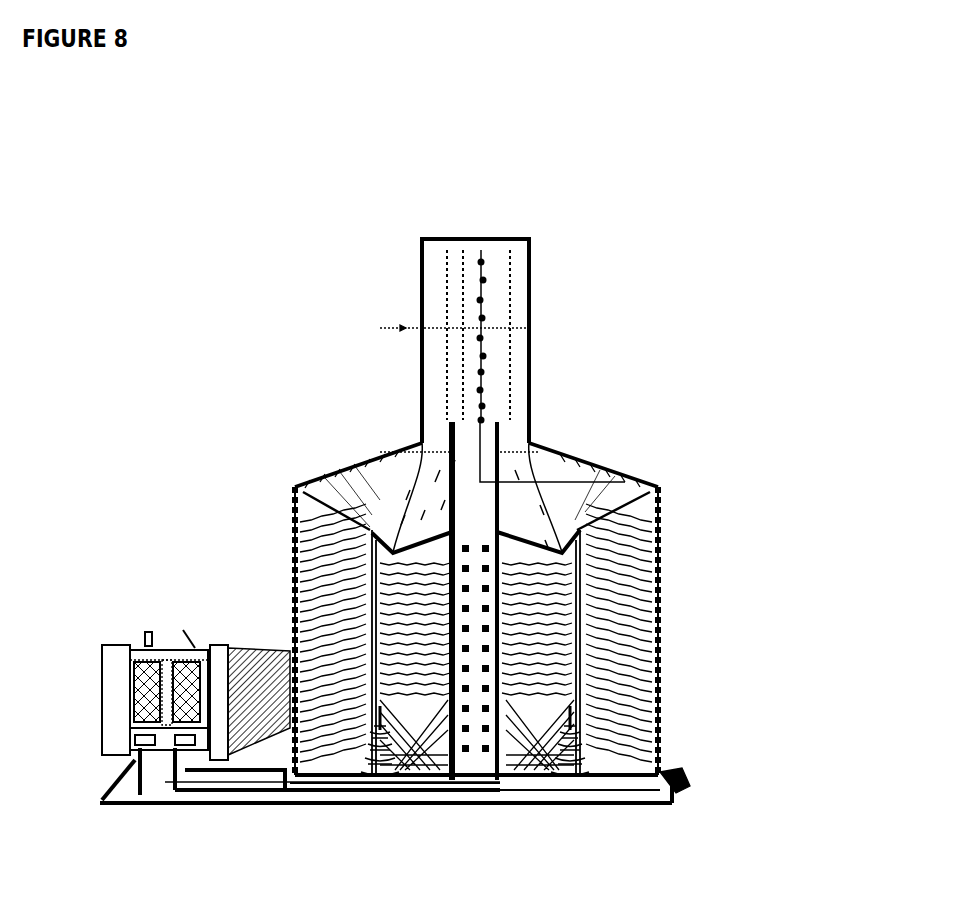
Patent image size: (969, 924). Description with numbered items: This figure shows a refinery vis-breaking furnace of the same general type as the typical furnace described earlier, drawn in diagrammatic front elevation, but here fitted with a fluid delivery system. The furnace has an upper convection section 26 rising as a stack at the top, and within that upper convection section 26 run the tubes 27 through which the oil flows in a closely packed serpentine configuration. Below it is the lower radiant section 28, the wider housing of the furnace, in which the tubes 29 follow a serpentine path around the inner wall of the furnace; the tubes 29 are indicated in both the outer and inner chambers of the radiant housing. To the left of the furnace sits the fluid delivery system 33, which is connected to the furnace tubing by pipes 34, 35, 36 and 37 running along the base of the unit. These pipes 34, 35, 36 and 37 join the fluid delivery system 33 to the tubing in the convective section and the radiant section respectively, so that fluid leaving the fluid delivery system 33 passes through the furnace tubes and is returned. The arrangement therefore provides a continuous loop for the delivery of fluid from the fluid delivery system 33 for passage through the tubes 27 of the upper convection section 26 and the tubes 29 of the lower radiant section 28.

The upper convection section 26 is at (532, 270).
The tubes 27 is at (488, 372).
The lower radiant section 28 is at (664, 586).
The tubes 29 is at (390, 562).
The fluid delivery system 33 is at (212, 655).
The pipe 34 is at (104, 805).
The pipe 35 is at (143, 805).
The pipe 36 is at (175, 805).
The pipe 37 is at (213, 805).